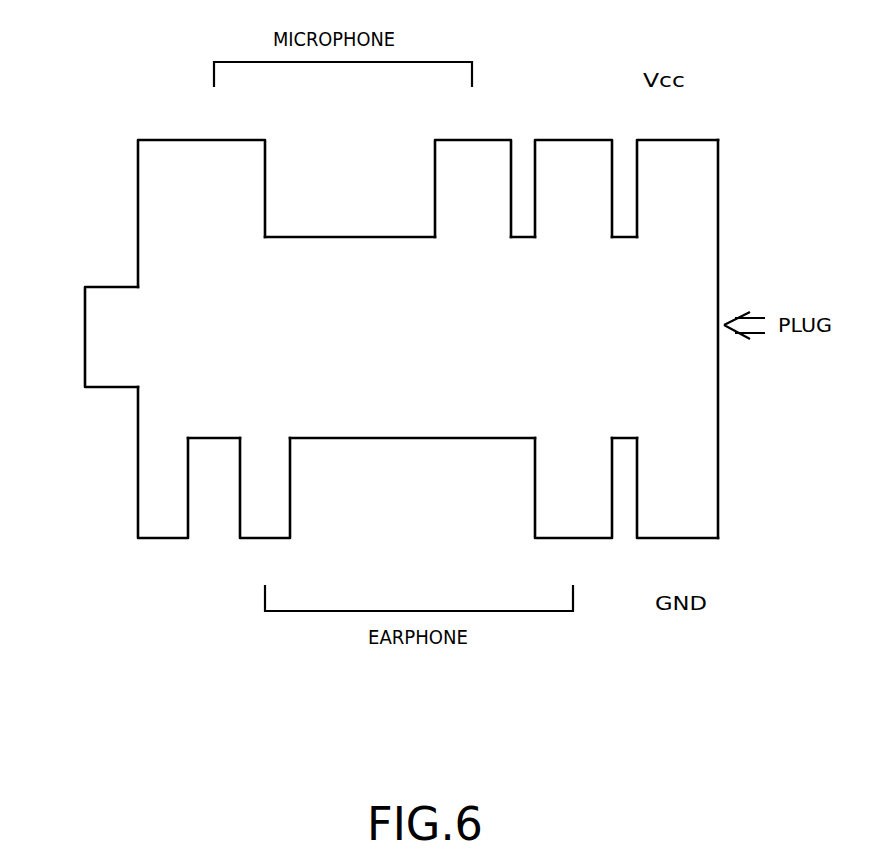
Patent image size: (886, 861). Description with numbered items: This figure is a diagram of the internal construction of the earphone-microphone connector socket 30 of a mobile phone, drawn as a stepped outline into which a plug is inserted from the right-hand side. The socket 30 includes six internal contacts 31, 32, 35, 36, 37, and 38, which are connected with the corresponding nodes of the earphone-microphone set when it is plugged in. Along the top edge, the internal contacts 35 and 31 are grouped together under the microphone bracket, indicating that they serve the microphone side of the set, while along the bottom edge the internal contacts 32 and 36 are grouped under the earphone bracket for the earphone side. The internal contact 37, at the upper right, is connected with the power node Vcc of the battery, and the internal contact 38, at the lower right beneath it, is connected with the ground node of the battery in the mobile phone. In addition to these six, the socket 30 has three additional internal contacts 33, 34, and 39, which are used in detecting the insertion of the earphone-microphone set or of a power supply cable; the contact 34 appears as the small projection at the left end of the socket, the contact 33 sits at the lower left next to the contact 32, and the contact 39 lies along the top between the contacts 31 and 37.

The earphone-microphone connector socket 30 is at (615, 326).
The internal contact 31 is at (486, 138).
The internal contact 32 is at (264, 540).
The additional internal contact 33 is at (162, 540).
The additional internal contact 34 is at (84, 338).
The internal contact 35 is at (235, 138).
The internal contact 36 is at (590, 540).
The internal contact 37 is at (697, 138).
The internal contact 38 is at (695, 540).
The additional internal contact 39 is at (593, 138).